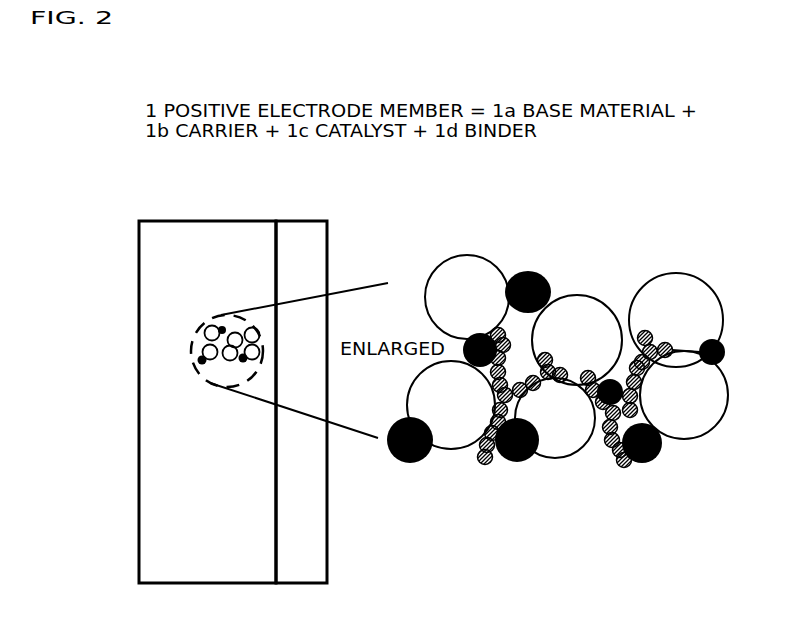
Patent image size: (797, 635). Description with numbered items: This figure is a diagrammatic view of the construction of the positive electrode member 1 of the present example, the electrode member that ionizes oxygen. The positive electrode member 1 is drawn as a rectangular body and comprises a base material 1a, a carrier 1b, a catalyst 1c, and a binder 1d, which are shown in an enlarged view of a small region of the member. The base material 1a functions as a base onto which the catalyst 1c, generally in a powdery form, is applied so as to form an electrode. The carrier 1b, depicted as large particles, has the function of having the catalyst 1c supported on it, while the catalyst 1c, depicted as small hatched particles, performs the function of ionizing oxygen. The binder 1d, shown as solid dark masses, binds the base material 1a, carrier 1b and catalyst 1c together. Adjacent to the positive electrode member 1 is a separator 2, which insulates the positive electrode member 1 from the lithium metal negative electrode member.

The positive electrode member 1 is at (232, 372).
The base material 1a is at (147, 220).
The carrier 1b is at (682, 424).
The catalyst 1c is at (645, 330).
The binder 1d is at (538, 270).
The separator 2 is at (302, 218).